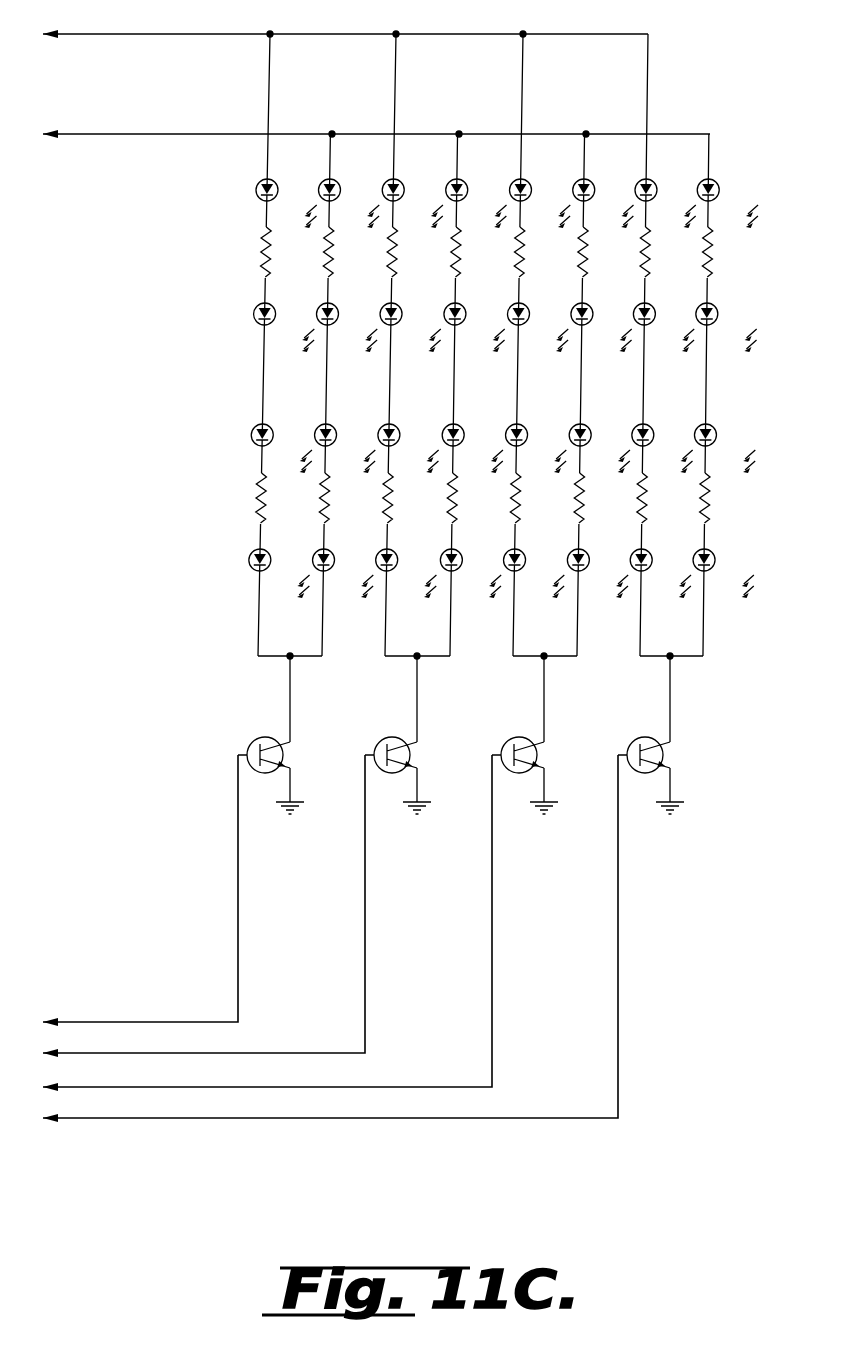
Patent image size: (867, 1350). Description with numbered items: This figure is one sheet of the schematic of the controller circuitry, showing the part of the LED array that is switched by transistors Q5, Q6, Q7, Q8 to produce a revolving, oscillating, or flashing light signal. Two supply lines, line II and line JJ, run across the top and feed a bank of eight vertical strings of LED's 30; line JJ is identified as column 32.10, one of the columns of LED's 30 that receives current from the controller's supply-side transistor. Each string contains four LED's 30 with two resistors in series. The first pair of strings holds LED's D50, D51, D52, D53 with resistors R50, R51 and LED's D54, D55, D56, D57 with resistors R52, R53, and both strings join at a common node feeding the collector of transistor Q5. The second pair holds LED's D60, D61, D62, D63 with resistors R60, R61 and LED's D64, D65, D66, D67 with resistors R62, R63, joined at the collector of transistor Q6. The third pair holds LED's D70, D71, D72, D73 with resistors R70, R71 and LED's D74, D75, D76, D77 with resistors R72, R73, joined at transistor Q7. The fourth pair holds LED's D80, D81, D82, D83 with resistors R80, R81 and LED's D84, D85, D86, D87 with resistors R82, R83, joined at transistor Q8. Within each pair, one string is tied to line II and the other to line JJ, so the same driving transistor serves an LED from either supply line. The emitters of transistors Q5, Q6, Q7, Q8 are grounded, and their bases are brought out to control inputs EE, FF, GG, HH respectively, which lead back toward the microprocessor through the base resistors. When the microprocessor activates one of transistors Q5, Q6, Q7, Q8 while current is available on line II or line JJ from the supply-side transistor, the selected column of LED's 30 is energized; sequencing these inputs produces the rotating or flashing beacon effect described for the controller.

The LED 30 is at (673, 155).
The column of LED's 32.10 is at (376, 71).
The supply line II is at (86, 32).
The supply line JJ is at (90, 115).
The control input EE is at (118, 1020).
The control input FF is at (120, 1051).
The control input GG is at (126, 1082).
The control input HH is at (132, 1113).
The transistor Q5 is at (281, 735).
The transistor Q6 is at (408, 735).
The transistor Q7 is at (535, 735).
The transistor Q8 is at (661, 735).
The light emitting diode D50 is at (286, 203).
The light emitting diode D51 is at (284, 327).
The light emitting diode D52 is at (282, 448).
The light emitting diode D53 is at (279, 573).
The light emitting diode D54 is at (349, 203).
The light emitting diode D55 is at (347, 327).
The light emitting diode D56 is at (345, 448).
The light emitting diode D57 is at (343, 573).
The light emitting diode D60 is at (413, 203).
The light emitting diode D61 is at (410, 327).
The light emitting diode D62 is at (408, 448).
The light emitting diode D63 is at (406, 573).
The light emitting diode D64 is at (476, 203).
The light emitting diode D65 is at (474, 327).
The light emitting diode D66 is at (473, 448).
The light emitting diode D67 is at (471, 573).
The light emitting diode D70 is at (540, 203).
The light emitting diode D71 is at (538, 327).
The light emitting diode D72 is at (536, 448).
The light emitting diode D73 is at (534, 573).
The light emitting diode D74 is at (603, 203).
The light emitting diode D75 is at (601, 327).
The light emitting diode D76 is at (600, 448).
The light emitting diode D77 is at (598, 573).
The light emitting diode D80 is at (665, 203).
The light emitting diode D81 is at (664, 327).
The light emitting diode D82 is at (662, 448).
The light emitting diode D83 is at (661, 573).
The light emitting diode D84 is at (728, 203).
The light emitting diode D85 is at (726, 327).
The light emitting diode D86 is at (725, 448).
The light emitting diode D87 is at (724, 573).
The resistor R50 is at (279, 252).
The resistor R51 is at (275, 498).
The resistor R52 is at (341, 252).
The resistor R53 is at (337, 498).
The resistor R60 is at (406, 252).
The resistor R61 is at (401, 498).
The resistor R62 is at (468, 252).
The resistor R63 is at (465, 498).
The resistor R70 is at (532, 252).
The resistor R71 is at (528, 498).
The resistor R72 is at (595, 252).
The resistor R73 is at (592, 498).
The resistor R80 is at (658, 252).
The resistor R81 is at (655, 498).
The resistor R82 is at (720, 252).
The resistor R83 is at (717, 498).